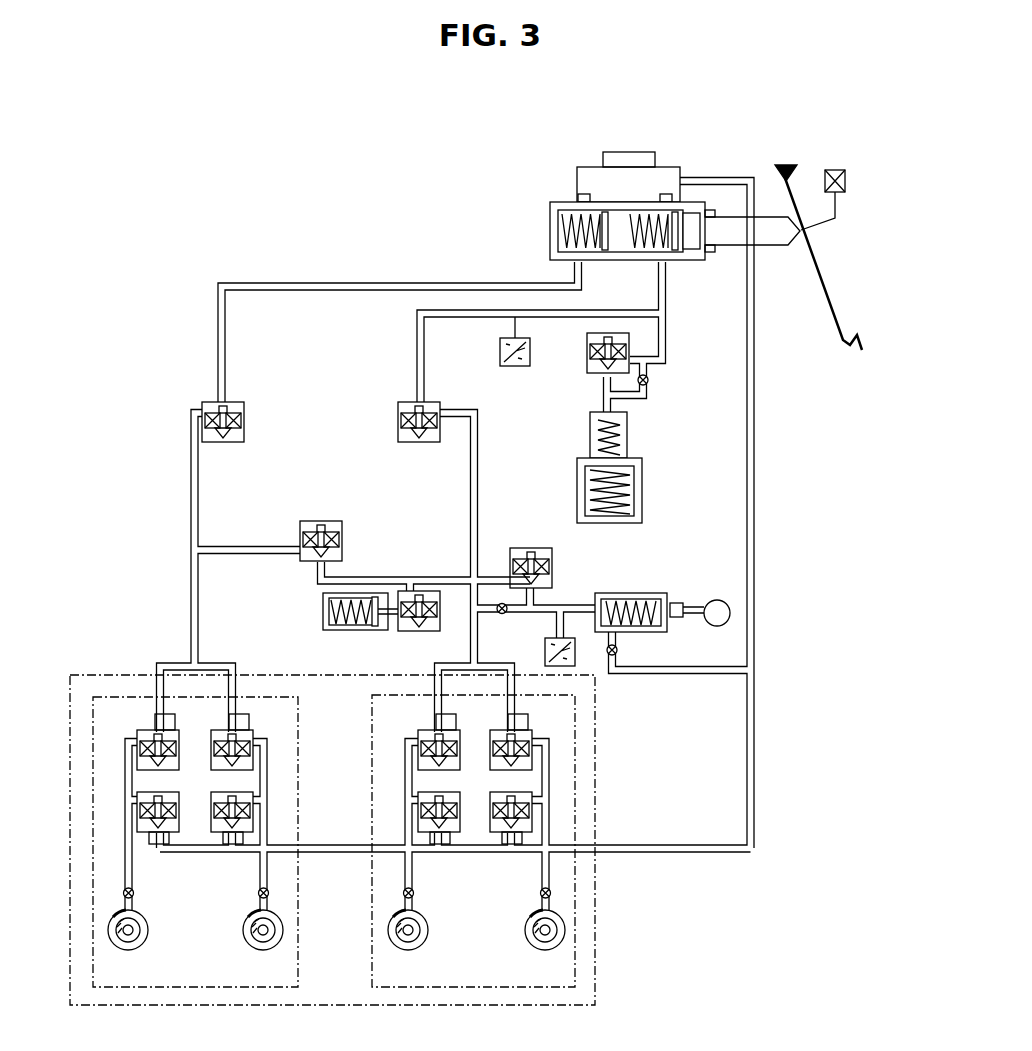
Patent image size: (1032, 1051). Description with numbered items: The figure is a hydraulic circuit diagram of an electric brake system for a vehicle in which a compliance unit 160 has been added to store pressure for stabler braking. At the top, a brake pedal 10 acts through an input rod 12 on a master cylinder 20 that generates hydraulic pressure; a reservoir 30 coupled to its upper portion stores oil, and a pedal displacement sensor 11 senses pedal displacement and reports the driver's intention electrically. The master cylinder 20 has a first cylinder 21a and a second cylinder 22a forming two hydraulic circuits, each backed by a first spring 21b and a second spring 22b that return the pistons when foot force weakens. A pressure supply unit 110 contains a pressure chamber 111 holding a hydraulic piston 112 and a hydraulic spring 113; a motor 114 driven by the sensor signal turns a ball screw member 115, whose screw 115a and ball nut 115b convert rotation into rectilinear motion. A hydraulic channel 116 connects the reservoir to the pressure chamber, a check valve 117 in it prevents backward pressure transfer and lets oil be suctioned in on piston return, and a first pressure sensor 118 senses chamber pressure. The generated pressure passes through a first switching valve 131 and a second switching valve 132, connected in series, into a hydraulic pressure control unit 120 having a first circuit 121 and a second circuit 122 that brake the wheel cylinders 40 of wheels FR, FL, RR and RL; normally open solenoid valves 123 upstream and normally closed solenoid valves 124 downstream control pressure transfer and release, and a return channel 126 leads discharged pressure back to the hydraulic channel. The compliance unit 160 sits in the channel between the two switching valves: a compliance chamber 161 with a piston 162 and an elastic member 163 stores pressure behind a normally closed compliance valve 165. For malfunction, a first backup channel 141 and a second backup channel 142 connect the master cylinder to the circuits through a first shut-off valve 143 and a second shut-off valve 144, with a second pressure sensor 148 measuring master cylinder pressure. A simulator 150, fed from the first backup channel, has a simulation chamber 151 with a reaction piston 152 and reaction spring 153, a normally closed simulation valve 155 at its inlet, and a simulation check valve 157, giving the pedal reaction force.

The brake pedal 10 is at (818, 262).
The pedal displacement sensor 11 is at (838, 170).
The input rod 12 is at (765, 246).
The master cylinder 20 is at (550, 208).
The first cylinder 21a is at (690, 258).
The first spring 21b is at (645, 258).
The second cylinder 22a is at (604, 258).
The second spring 22b is at (555, 227).
The reservoir 30 is at (590, 165).
The wheel cylinders 40 is at (522, 915).
The pressure supply unit 110 is at (738, 583).
The pressure chamber 111 is at (600, 593).
The hydraulic piston 112 is at (632, 635).
The hydraulic spring 113 is at (625, 600).
The motor 114 is at (720, 626).
The ball screw member 115 is at (720, 548).
The screw 115a is at (678, 603).
The ball nut 115b is at (690, 605).
The hydraulic channel 116 is at (755, 491).
The check valve 117 is at (617, 655).
The first pressure sensor 118 is at (545, 650).
The hydraulic pressure control unit 120 is at (290, 672).
The first circuit 121 is at (598, 773).
The second circuit 122 is at (250, 695).
The NO type solenoid valve 123 is at (253, 740).
The NC type solenoid valve 124 is at (253, 800).
The return channel 126 is at (655, 852).
The first switching valve 131 is at (530, 547).
The second switching valve 132 is at (321, 521).
The first backup channel 141 is at (548, 317).
The second backup channel 142 is at (385, 283).
The first shut-off valve 143 is at (398, 418).
The second shut-off valve 144 is at (243, 418).
The second pressure sensor 148 is at (515, 365).
The simulator 150 is at (755, 388).
The simulation chamber 151 is at (643, 465).
The reaction piston 152 is at (628, 420).
The reaction spring 153 is at (630, 507).
The simulation valve 155 is at (590, 362).
The simulation check valve 157 is at (650, 380).
The compliance unit 160 is at (400, 585).
The compliance chamber 161 is at (330, 630).
The piston 162 is at (380, 622).
The elastic member 163 is at (355, 630).
The compliance valve 165 is at (410, 633).